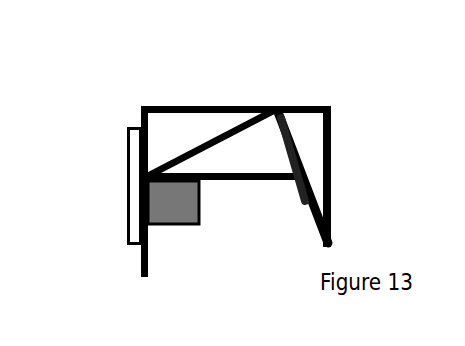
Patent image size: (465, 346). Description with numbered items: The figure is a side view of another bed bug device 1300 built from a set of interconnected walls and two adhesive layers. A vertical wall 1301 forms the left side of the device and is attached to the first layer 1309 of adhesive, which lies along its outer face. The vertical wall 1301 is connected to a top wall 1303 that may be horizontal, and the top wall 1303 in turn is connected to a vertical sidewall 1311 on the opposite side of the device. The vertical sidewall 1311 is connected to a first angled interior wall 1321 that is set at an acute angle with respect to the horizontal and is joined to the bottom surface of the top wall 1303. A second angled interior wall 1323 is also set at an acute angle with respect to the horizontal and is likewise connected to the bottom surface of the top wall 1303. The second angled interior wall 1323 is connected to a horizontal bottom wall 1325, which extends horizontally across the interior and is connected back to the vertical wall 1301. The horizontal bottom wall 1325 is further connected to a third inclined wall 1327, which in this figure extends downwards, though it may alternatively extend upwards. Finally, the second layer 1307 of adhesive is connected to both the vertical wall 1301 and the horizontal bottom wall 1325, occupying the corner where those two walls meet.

The bed bug device 1300 is at (237, 158).
The vertical wall 1301 is at (140, 260).
The top wall 1303 is at (300, 107).
The second layer of adhesive 1307 is at (170, 225).
The first layer of adhesive 1309 is at (122, 181).
The vertical sidewall 1311 is at (332, 160).
The first angled interior wall 1321 is at (287, 180).
The second angled interior wall 1323 is at (218, 140).
The horizontal bottom wall 1325 is at (247, 180).
The third inclined wall 1327 is at (332, 197).